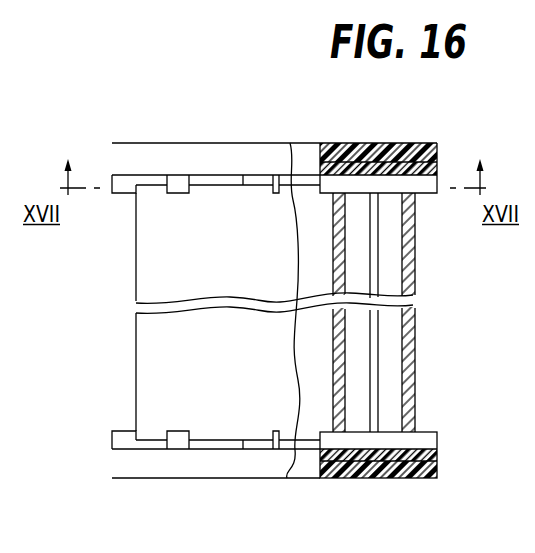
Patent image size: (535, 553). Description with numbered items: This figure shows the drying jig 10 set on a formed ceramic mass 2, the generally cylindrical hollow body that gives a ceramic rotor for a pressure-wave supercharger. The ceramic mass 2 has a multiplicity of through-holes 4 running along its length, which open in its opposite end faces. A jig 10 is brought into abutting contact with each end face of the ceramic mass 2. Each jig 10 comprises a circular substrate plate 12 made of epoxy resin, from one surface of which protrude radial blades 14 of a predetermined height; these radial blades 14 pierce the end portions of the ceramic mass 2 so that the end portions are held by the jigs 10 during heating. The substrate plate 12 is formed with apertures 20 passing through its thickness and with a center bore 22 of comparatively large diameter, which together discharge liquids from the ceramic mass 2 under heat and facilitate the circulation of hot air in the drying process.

The jig 10 is at (270, 135).
The formed ceramic mass 2 is at (140, 268).
The through-holes 4 is at (397, 325).
The substrate plate 12 is at (385, 478).
The radial blades 14 is at (176, 178).
The apertures 20 is at (346, 143).
The center bore 22 is at (312, 143).